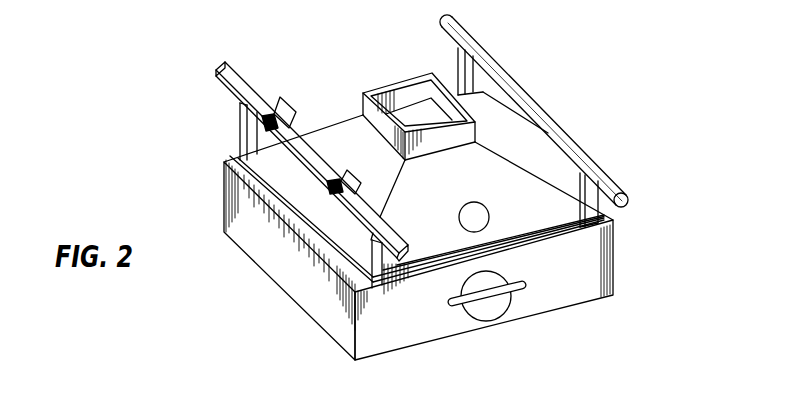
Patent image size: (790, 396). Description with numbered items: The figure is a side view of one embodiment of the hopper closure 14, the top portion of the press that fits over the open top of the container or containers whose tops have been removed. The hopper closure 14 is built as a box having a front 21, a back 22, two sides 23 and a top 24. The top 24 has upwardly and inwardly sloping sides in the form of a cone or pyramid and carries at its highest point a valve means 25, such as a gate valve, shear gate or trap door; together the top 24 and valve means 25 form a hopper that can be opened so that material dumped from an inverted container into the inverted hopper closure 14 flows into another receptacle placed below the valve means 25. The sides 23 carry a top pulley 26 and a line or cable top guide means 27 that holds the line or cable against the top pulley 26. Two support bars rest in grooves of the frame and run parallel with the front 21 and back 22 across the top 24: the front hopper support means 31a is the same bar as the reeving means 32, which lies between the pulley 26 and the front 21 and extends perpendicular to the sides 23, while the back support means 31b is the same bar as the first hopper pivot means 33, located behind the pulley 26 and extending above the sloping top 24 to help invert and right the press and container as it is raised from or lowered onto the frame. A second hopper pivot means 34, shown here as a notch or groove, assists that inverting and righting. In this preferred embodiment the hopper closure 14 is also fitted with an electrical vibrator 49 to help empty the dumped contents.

The hopper closure 14 is at (470, 216).
The front 21 is at (298, 288).
The back 22 is at (614, 270).
The sides 23 is at (572, 288).
The top 24 is at (503, 172).
The valve means 25 is at (418, 112).
The top pulley 26 is at (498, 309).
The line or cable top guide means 27 is at (458, 308).
The front hopper support means 31a is at (284, 217).
The back support means 31b is at (548, 121).
The reeving means 32 is at (217, 83).
The first hopper pivot means 33 is at (517, 83).
The second hopper pivot means 34 is at (291, 100).
The electrical vibrator 49 is at (474, 202).